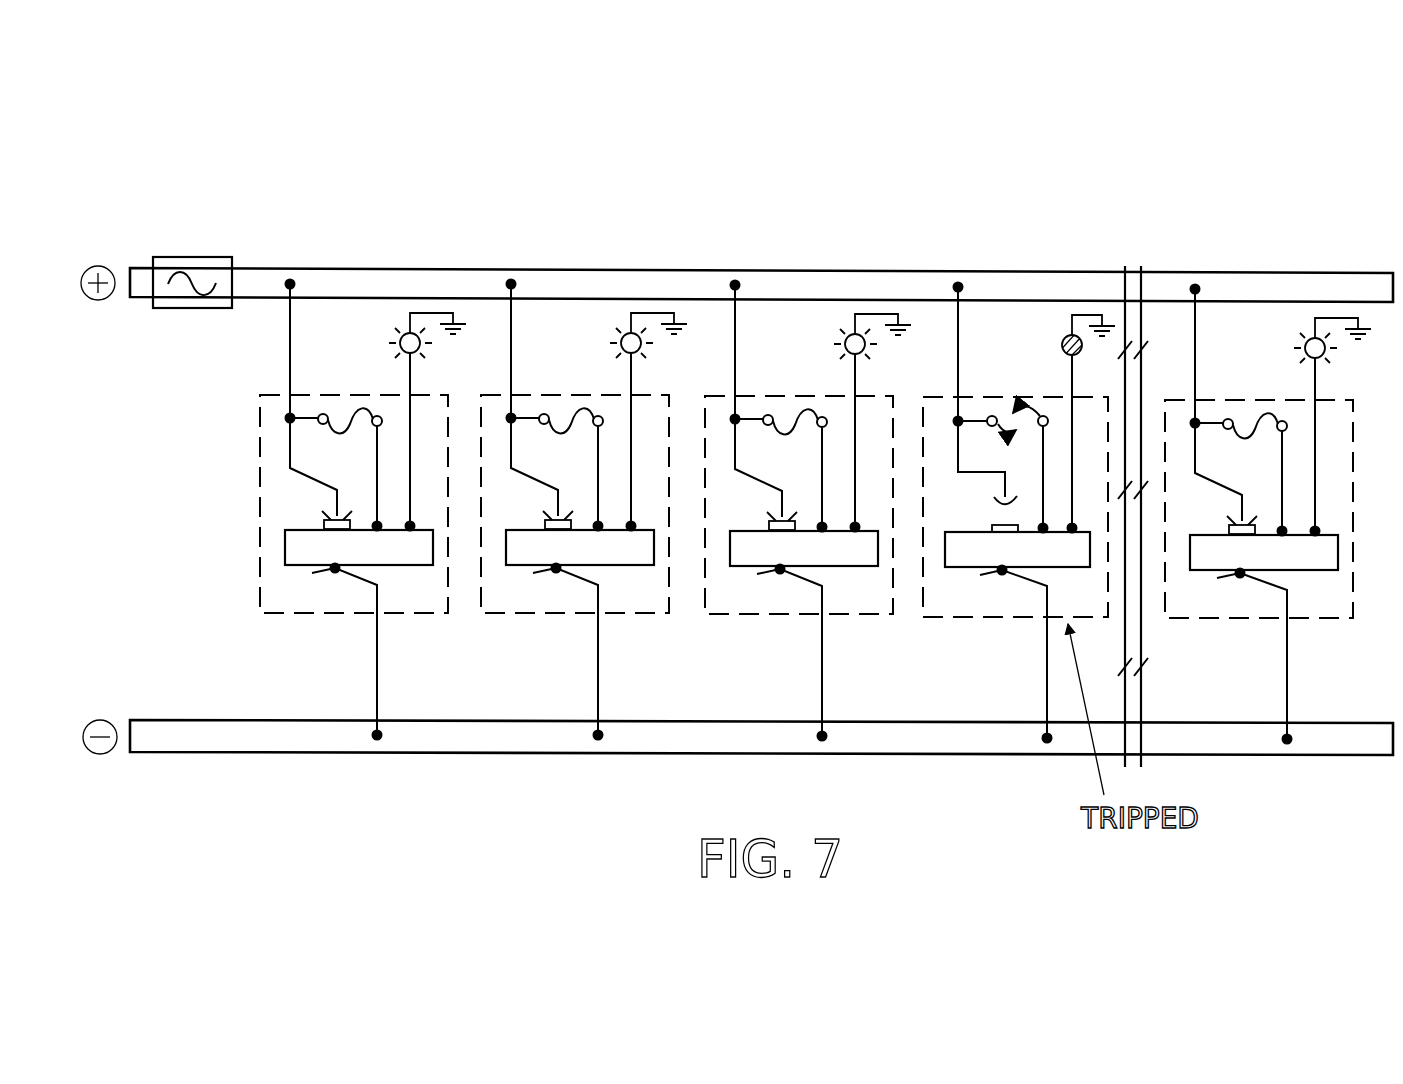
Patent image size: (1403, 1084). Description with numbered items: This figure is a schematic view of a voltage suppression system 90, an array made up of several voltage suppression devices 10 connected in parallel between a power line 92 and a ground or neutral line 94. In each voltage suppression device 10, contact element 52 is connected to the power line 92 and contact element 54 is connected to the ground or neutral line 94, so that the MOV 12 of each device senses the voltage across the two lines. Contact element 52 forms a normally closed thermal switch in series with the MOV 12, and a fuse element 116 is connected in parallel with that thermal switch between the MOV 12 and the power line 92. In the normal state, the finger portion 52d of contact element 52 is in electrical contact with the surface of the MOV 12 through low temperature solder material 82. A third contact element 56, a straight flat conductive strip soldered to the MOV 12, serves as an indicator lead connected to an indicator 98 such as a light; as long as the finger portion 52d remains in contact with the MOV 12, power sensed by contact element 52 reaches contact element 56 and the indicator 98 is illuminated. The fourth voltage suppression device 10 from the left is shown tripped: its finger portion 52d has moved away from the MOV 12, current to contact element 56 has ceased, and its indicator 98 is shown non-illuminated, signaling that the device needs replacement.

The voltage suppression device 10 is at (256, 437).
The MOV 12 is at (282, 548).
The contact element 52 is at (286, 342).
The finger portion 52d is at (323, 514).
The contact element 54 is at (371, 661).
The contact element 56 is at (413, 386).
The low temperature solder material 82 is at (322, 523).
The voltage suppression system 90 is at (197, 255).
The power line 92 is at (368, 283).
The ground or neutral line 94 is at (445, 740).
The indicator 98 is at (416, 334).
The fuse element 116 is at (351, 398).